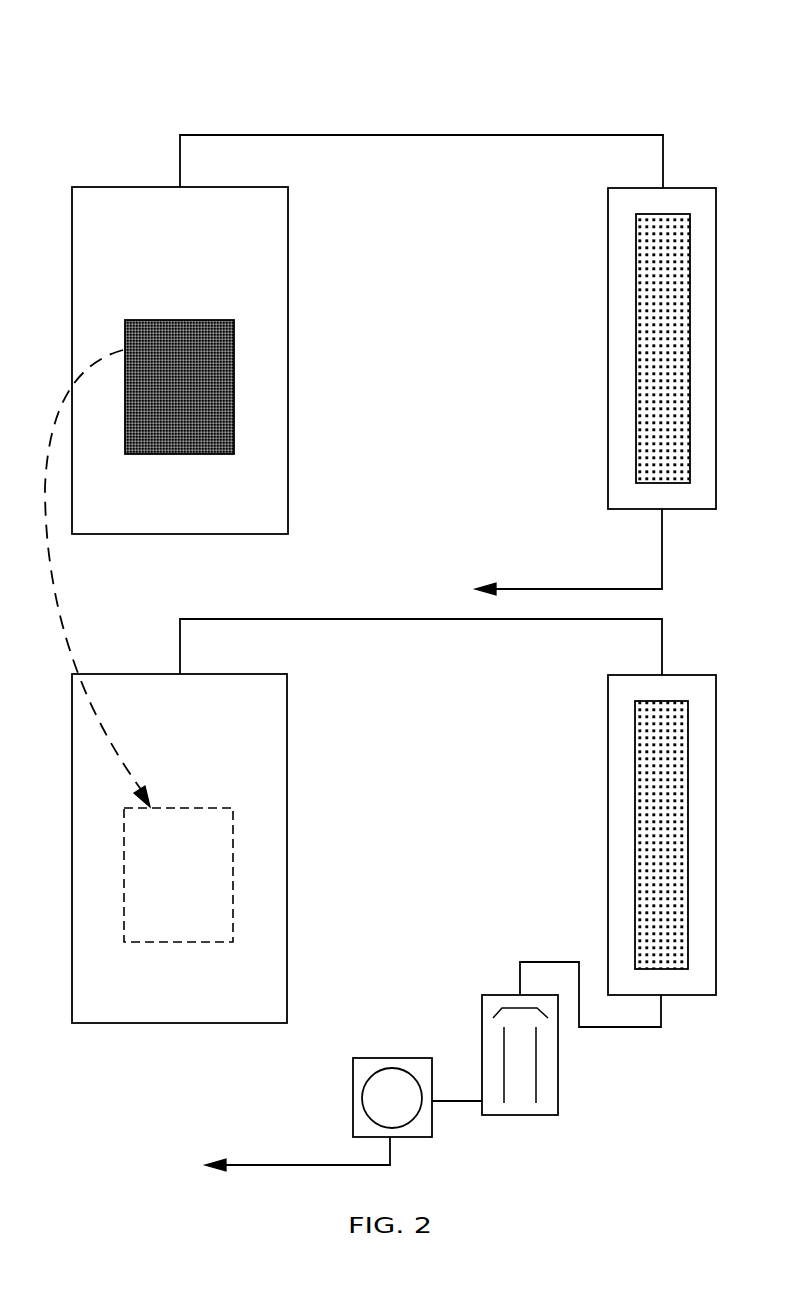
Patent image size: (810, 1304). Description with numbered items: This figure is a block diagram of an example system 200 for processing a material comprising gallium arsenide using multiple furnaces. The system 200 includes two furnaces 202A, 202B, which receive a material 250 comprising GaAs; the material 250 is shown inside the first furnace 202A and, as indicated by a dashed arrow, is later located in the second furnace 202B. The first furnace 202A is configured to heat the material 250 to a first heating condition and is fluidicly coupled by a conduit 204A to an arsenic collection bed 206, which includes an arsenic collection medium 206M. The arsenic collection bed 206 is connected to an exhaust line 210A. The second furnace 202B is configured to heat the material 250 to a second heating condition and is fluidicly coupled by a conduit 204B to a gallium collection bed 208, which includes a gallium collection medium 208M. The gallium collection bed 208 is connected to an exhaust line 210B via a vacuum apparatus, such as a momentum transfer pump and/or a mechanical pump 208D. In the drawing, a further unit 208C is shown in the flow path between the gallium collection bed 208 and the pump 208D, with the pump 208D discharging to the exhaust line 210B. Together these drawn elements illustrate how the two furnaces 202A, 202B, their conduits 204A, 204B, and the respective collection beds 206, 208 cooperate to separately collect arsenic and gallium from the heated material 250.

The system 200 is at (646, 78).
The first furnace 202A is at (125, 194).
The second furnace 202B is at (265, 728).
The conduit 204A is at (408, 134).
The conduit 204B is at (321, 619).
The arsenic collection bed 206 is at (685, 196).
The arsenic collection medium 206M is at (660, 307).
The gallium collection bed 208 is at (673, 685).
The gallium collection medium 208M is at (658, 843).
The collector 208C is at (492, 1004).
The mechanical pump 208D is at (365, 1066).
The exhaust line 210A is at (525, 588).
The exhaust line 210B is at (245, 1165).
The material 250 is at (205, 357).